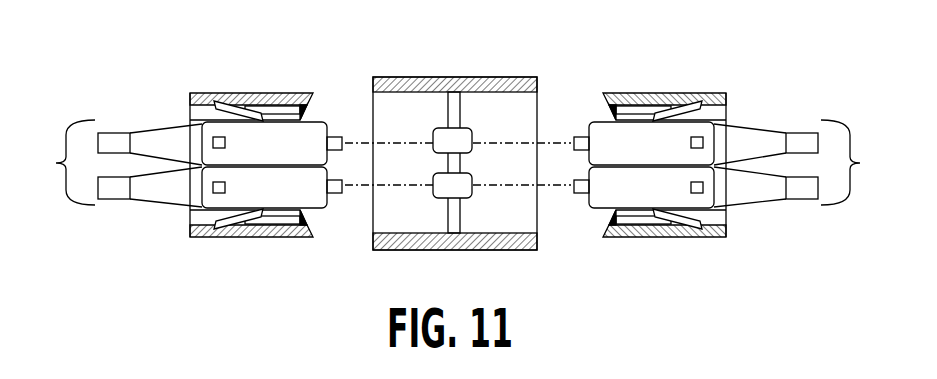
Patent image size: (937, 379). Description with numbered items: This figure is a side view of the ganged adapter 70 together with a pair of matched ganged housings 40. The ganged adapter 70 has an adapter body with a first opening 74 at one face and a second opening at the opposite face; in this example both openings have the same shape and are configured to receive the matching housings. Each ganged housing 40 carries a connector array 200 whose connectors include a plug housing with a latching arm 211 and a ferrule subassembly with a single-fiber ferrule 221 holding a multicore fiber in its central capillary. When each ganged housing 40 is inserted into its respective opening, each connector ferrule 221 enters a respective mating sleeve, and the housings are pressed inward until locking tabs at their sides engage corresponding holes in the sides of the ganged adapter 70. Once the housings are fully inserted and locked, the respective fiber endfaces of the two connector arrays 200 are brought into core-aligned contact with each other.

The connector array 200 is at (459, 164).
The ganged housing 40 is at (268, 100).
The latching arm 211 is at (232, 108).
The single-fiber ferrule 221 is at (338, 137).
The ganged adapter 70 is at (467, 63).
The first opening 74 is at (485, 123).